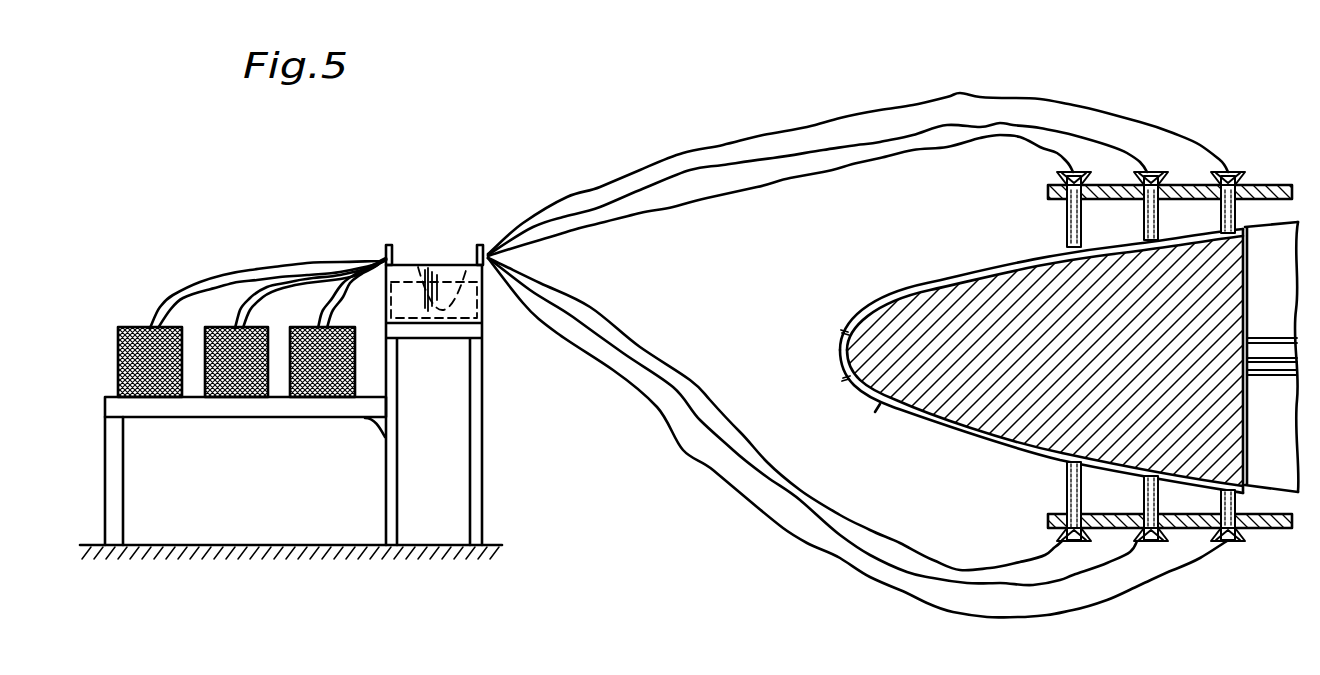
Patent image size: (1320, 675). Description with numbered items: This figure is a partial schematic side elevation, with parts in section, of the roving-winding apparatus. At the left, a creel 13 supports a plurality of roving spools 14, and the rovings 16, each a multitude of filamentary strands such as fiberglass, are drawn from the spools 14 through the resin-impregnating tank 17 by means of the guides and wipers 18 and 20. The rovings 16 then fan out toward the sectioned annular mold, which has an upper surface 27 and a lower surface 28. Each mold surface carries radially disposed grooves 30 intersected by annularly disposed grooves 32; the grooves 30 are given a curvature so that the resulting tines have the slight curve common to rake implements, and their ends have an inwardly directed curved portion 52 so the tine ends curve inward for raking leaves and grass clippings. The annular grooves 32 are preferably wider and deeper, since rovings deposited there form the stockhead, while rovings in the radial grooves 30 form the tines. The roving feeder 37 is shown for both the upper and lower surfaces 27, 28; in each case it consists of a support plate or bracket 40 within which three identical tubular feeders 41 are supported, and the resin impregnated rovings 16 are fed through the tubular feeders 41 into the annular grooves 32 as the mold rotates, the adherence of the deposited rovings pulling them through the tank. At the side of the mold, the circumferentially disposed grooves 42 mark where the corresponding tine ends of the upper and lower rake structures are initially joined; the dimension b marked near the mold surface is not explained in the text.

The creel 13 is at (343, 410).
The roving spools 14 is at (143, 326).
The rovings 16 is at (352, 283).
The resin-impregnating tank 17 is at (418, 270).
The guides and wipers 18 is at (386, 251).
The guides and wipers 20 is at (472, 246).
The upper surface 27 is at (990, 262).
The lower surface 28 is at (955, 432).
The radially disposed grooves 30 is at (930, 283).
The annularly disposed grooves 32 is at (1066, 238).
The roving feeder 37 is at (1052, 190).
The support plate or bracket 40 is at (1187, 187).
The tubular feeders 41 is at (1147, 172).
The circumferentially disposed grooves 42 is at (842, 355).
The inwardly directed curved portion 52 is at (843, 333).
The skin thickness b is at (878, 412).